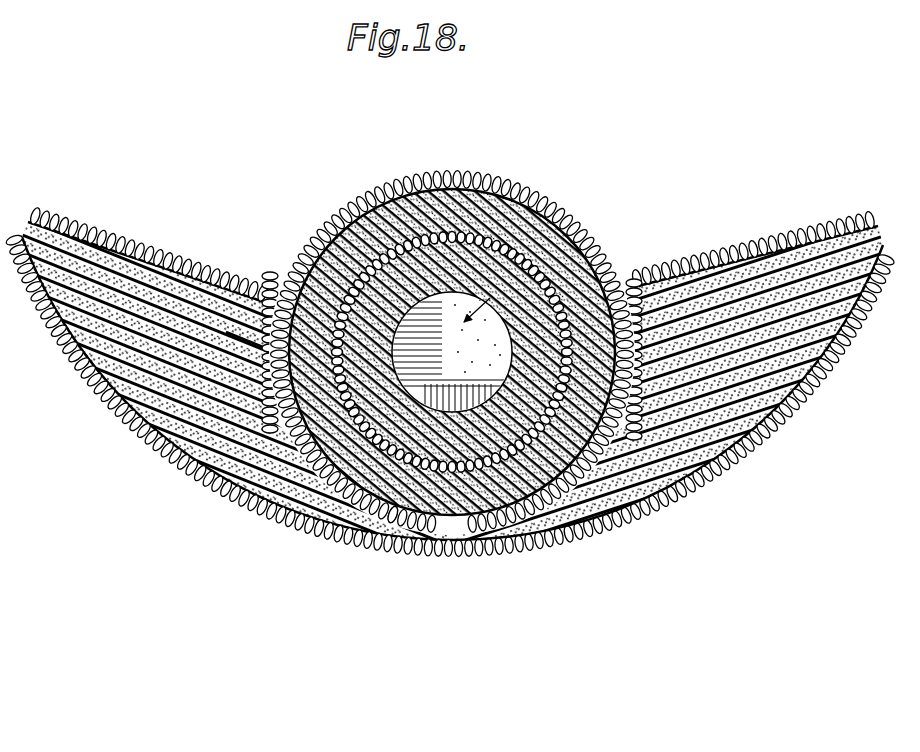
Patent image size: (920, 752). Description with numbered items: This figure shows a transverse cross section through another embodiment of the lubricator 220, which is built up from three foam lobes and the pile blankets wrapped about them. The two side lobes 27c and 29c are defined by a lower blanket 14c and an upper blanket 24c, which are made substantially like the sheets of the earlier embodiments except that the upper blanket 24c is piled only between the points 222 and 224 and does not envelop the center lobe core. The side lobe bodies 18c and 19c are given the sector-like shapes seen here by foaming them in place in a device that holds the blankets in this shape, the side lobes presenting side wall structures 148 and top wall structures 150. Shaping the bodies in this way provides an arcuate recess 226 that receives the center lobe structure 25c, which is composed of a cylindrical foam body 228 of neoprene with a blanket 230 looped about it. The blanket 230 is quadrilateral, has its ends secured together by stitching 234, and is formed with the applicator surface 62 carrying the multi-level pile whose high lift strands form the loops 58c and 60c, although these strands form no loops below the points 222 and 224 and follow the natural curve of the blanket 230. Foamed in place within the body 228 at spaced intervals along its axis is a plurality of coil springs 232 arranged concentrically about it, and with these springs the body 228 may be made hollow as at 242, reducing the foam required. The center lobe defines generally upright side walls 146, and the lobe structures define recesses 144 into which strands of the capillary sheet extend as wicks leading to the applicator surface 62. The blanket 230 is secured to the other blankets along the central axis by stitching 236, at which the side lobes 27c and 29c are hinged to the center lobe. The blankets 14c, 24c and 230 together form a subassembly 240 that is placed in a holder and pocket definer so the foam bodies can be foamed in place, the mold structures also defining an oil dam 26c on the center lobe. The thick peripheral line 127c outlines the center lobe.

The lower blanket 14c is at (273, 506).
The side lobe body 18c is at (172, 447).
The side lobe body 19c is at (802, 348).
The upper blanket 24c is at (147, 253).
The center lobe structure 25c is at (469, 320).
The oil dam 26c is at (580, 223).
The side lobe 27c is at (106, 398).
The side lobe 29c is at (754, 447).
The high lift strand loops 58c is at (432, 168).
The high lift strand loops 60c is at (463, 164).
The applicator surface 62 is at (503, 158).
The outer ring line 127c is at (495, 193).
The recesses 144 is at (373, 530).
The upright side walls 146 is at (254, 344).
The side wall structures 148 is at (313, 498).
The top wall structures 150 is at (110, 245).
The lubricator 220 is at (218, 490).
The point 222 is at (232, 290).
The point 224 is at (641, 290).
The arcuate recess 226 is at (413, 540).
The cylindrical foam body 228 is at (600, 243).
The blanket 230 is at (553, 195).
The coil springs 232 is at (299, 238).
The stitching 234 is at (487, 530).
The stitching 236 is at (460, 547).
The subassembly 240 is at (70, 353).
The hollow 242 is at (440, 297).